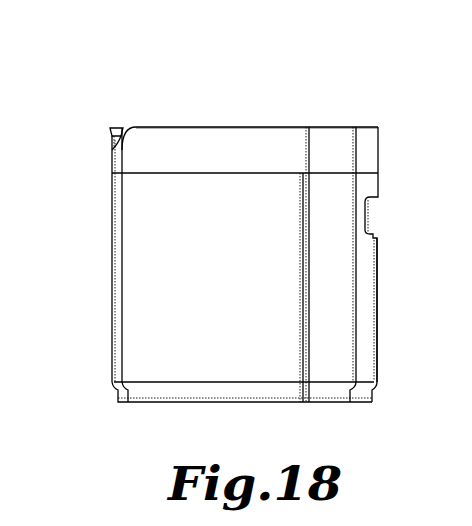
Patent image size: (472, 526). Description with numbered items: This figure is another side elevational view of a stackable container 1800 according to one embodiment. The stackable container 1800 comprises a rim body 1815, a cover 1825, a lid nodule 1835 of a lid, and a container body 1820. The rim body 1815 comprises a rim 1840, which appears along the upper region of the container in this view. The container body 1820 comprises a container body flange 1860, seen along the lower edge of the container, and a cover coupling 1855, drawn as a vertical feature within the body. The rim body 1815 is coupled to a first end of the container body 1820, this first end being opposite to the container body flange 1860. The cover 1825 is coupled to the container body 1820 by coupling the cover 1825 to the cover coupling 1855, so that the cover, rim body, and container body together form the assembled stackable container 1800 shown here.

The stackable container 1800 is at (224, 98).
The rim body 1815 is at (378, 156).
The container body 1820 is at (100, 275).
The cover 1825 is at (378, 275).
The lid nodule 1835 is at (110, 136).
The rim 1840 is at (286, 127).
The cover coupling 1855 is at (301, 261).
The container body flange 1860 is at (118, 393).